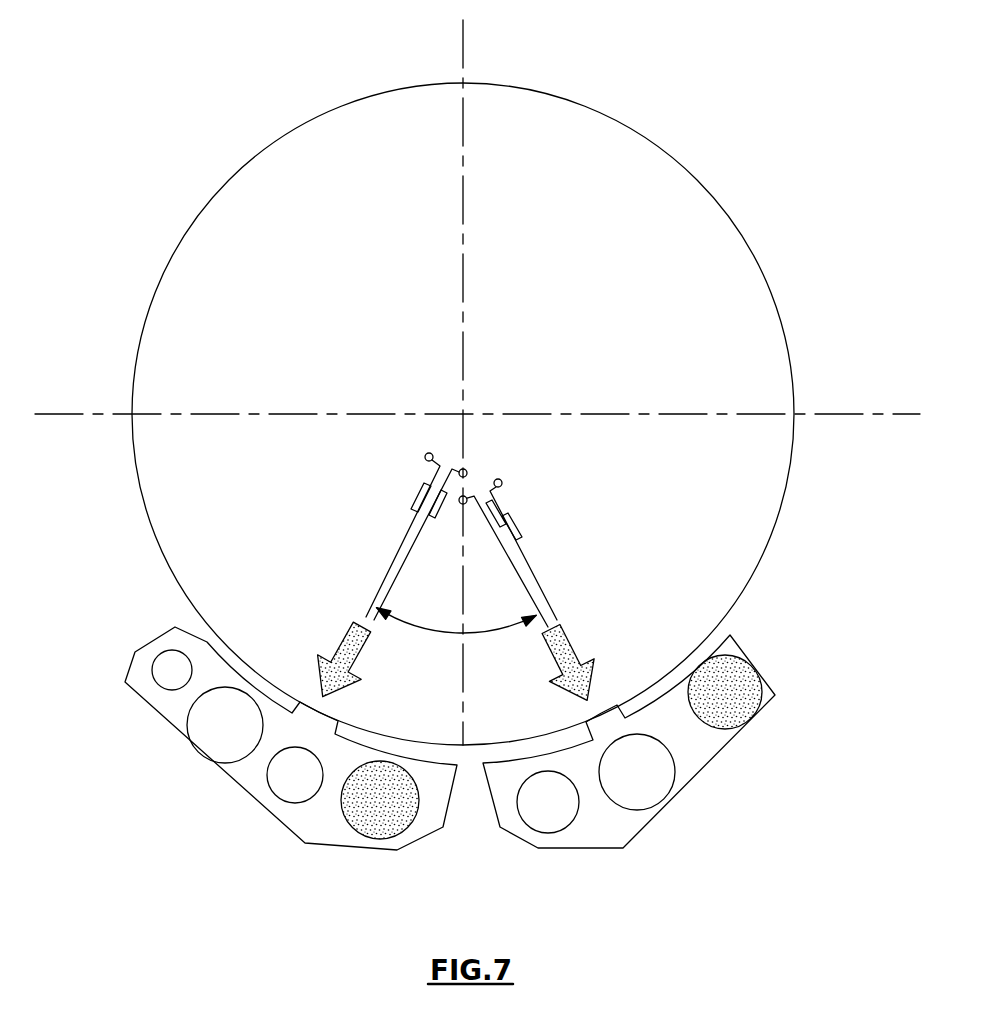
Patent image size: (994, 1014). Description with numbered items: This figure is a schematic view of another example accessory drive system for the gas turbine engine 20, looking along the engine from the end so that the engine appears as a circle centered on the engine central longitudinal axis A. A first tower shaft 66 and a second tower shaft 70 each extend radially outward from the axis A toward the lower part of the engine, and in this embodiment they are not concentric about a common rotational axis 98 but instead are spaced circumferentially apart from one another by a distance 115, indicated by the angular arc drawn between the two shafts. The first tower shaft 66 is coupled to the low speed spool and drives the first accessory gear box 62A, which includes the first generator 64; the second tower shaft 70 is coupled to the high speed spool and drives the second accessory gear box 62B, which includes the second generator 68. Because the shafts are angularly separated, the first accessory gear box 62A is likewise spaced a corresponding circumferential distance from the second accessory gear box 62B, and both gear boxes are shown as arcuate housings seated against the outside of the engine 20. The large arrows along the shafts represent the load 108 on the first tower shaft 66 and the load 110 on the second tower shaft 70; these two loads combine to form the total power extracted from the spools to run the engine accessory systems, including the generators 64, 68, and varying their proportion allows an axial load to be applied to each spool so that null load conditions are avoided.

The common rotational axis 98 is at (464, 43).
The gas turbine engine 20 is at (733, 220).
The engine central longitudinal axis A is at (470, 406).
The second tower shaft 70 is at (412, 525).
The first tower shaft 66 is at (534, 577).
The load on the second tower shaft 110 is at (352, 657).
The load on the first tower shaft 108 is at (567, 663).
The circumferential distance 115 is at (466, 640).
The second accessory gear box 62B is at (258, 828).
The first accessory gear box 62A is at (704, 792).
The second generator 68 is at (377, 839).
The first generator 64 is at (752, 718).